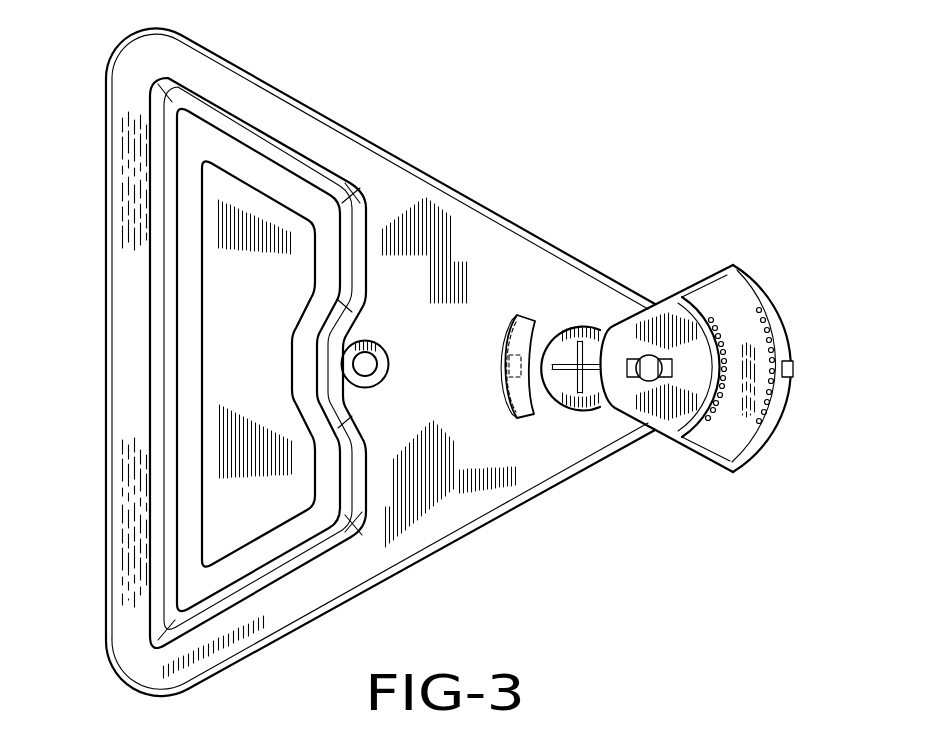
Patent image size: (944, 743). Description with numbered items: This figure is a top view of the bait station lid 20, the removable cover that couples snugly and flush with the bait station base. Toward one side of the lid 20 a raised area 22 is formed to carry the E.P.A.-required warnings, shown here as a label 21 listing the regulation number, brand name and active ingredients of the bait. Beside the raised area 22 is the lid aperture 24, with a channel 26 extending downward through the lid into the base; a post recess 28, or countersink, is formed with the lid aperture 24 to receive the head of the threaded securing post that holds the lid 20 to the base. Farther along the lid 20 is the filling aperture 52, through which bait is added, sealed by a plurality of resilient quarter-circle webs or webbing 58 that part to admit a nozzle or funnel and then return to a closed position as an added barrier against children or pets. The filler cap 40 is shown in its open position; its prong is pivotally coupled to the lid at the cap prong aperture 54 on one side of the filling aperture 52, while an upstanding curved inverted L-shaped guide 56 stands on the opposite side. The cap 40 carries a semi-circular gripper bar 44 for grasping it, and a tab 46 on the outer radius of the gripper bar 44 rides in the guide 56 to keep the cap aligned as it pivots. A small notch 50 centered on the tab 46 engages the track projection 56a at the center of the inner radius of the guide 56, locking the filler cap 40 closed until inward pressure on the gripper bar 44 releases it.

The bait station lid 20 is at (471, 219).
The label 21 is at (232, 348).
The raised area 22 is at (278, 152).
The lid aperture 24 is at (390, 360).
The channel 26 is at (369, 376).
The post recess 28 is at (379, 345).
The filler cap 40 is at (742, 261).
The gripper bar 44 is at (760, 303).
The tab 46 is at (770, 433).
The notch 50 is at (790, 365).
The filling aperture 52 is at (580, 363).
The cap prong aperture 54 is at (647, 355).
The L-shaped guide 56 is at (494, 412).
The track projection 56a is at (514, 365).
The webbing 58 is at (565, 410).